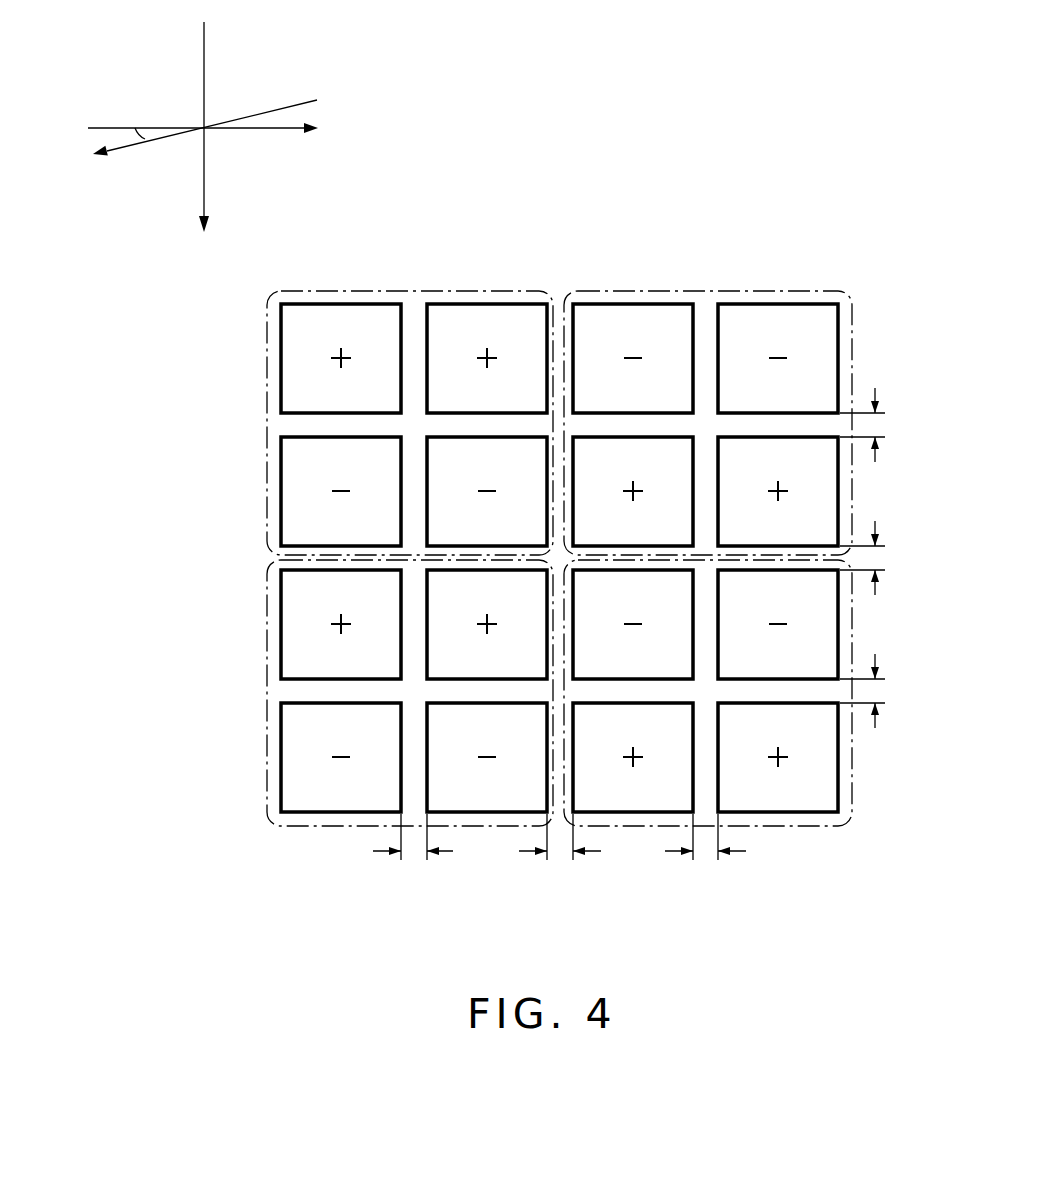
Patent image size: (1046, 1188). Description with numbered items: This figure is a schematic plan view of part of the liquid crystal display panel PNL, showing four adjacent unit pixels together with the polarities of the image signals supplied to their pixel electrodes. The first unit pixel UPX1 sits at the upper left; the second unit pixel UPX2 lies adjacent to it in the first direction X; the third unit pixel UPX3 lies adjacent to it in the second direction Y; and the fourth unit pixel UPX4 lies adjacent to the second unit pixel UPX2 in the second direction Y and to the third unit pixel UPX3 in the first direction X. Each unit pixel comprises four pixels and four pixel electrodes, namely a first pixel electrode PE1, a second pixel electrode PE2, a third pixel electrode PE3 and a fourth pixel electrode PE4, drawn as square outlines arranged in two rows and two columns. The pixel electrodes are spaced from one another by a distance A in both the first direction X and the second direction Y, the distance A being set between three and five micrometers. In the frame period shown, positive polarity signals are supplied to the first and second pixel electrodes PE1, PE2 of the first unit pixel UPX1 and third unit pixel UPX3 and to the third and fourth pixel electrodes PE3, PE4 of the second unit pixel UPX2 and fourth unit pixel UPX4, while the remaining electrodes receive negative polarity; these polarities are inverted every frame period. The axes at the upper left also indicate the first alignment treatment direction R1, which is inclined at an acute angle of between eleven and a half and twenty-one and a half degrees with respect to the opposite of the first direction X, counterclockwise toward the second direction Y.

The first pixel electrode PE1 is at (341, 304).
The second pixel electrode PE2 is at (487, 304).
The third pixel electrode PE3 is at (281, 452).
The fourth pixel electrode PE4 is at (428, 509).
The first unit pixel UPX1 is at (415, 291).
The second unit pixel UPX2 is at (710, 291).
The third unit pixel UPX3 is at (303, 827).
The fourth unit pixel UPX4 is at (813, 827).
The liquid crystal display panel PNL is at (873, 202).
The distance A is at (885, 426).
The first direction X is at (214, 129).
The second direction Y is at (202, 143).
The first alignment treatment direction R1 is at (189, 134).